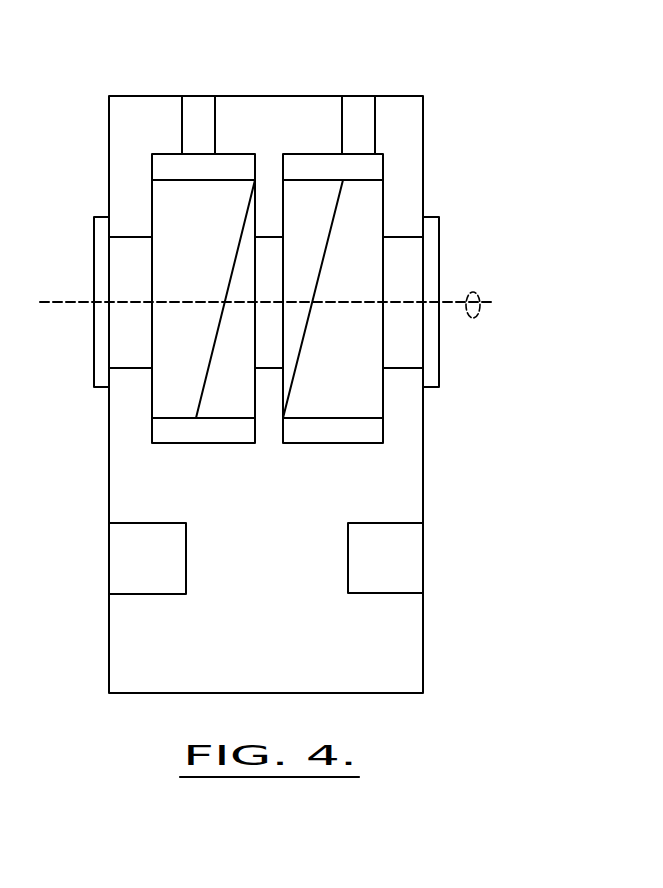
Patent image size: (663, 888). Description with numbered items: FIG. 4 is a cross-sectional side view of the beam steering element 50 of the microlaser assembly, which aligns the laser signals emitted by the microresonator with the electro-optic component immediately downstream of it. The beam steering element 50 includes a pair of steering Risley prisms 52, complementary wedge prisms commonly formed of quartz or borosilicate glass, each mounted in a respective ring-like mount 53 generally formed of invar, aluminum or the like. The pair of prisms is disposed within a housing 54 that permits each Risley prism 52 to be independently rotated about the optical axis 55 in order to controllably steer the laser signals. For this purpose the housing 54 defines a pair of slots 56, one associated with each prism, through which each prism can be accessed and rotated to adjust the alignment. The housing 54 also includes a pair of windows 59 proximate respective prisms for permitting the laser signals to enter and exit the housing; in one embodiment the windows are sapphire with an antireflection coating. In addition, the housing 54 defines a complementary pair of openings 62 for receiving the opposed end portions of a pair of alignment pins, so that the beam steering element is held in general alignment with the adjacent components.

The beam steering element 50 is at (435, 80).
The steering Risley prisms 52 is at (178, 397).
The ring-like mounts 53 is at (152, 154).
The housing 54 is at (392, 482).
The optical axis 55 is at (472, 290).
The slots 56 is at (203, 110).
The windows 59 is at (105, 265).
The openings 62 is at (135, 553).